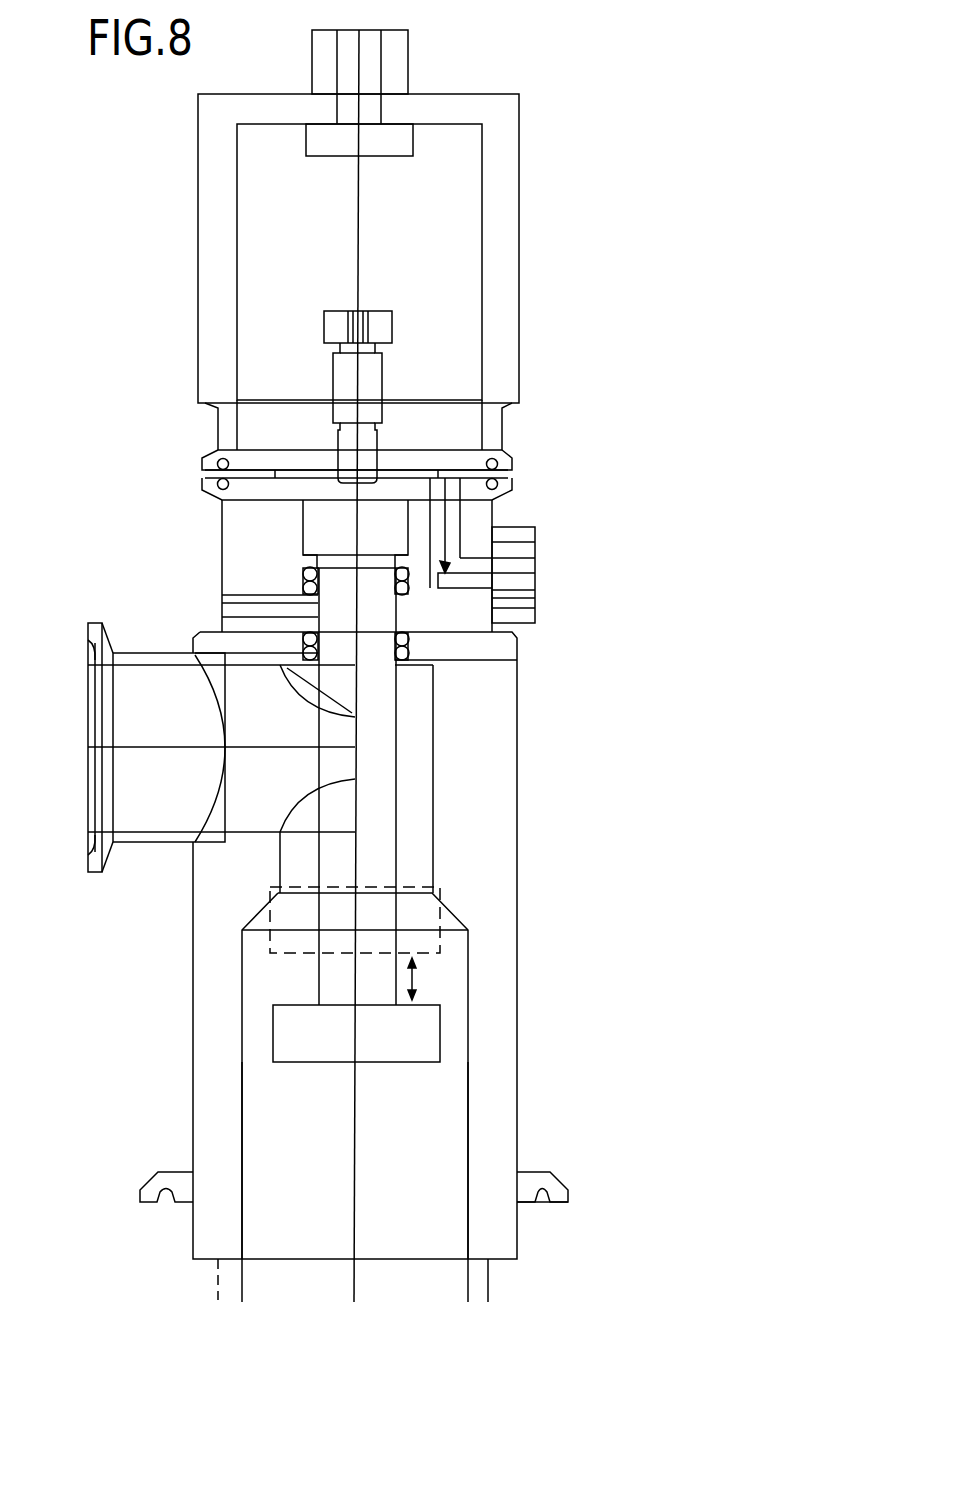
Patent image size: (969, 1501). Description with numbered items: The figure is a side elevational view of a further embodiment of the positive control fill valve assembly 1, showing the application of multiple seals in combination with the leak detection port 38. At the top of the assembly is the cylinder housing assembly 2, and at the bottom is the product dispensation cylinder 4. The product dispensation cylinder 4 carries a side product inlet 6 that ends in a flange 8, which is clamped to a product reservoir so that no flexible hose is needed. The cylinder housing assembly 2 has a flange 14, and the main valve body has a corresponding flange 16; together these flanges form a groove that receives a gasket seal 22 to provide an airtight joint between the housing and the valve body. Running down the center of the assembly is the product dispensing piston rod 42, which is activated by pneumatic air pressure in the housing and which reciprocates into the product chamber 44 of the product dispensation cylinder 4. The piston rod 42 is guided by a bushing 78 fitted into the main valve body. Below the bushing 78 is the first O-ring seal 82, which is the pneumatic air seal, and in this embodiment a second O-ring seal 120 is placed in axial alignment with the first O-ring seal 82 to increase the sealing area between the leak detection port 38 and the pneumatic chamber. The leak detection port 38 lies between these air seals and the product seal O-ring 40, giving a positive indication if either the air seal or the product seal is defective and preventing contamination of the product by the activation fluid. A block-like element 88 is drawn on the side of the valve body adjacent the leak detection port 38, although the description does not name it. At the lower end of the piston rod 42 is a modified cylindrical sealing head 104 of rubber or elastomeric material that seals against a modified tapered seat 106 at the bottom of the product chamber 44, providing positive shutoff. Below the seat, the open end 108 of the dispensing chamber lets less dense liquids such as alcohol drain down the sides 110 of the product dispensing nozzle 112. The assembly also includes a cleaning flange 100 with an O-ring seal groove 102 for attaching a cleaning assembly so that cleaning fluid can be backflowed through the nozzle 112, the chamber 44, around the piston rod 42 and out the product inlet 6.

The positive control fill valve assembly 1 is at (582, 403).
The cylinder housing assembly 2 is at (510, 233).
The product dispensation cylinder 4 is at (503, 852).
The product inlet 6 is at (147, 672).
The flange 8 is at (93, 632).
The flange 14 is at (512, 463).
The flange 16 is at (508, 487).
The gasket seal 22 is at (203, 474).
The leak detection port 38 is at (218, 612).
The product seal O-ring 40 is at (412, 653).
The product dispensing piston rod 42 is at (360, 840).
The product chamber 44 is at (395, 777).
The bushing 78 is at (313, 532).
The pneumatic air O-ring seal 82 is at (412, 568).
The terminal block 88 is at (535, 573).
The cleaning flange 100 is at (153, 1177).
The O-ring seal groove 102 is at (542, 1202).
The modified cylindrical sealing head 104 is at (418, 927).
The modified tapered seat 106 is at (447, 912).
The open end 108 is at (420, 1260).
The sides 110 is at (460, 1112).
The product dispensing nozzle 112 is at (403, 1143).
The second O-ring seal 120 is at (413, 603).